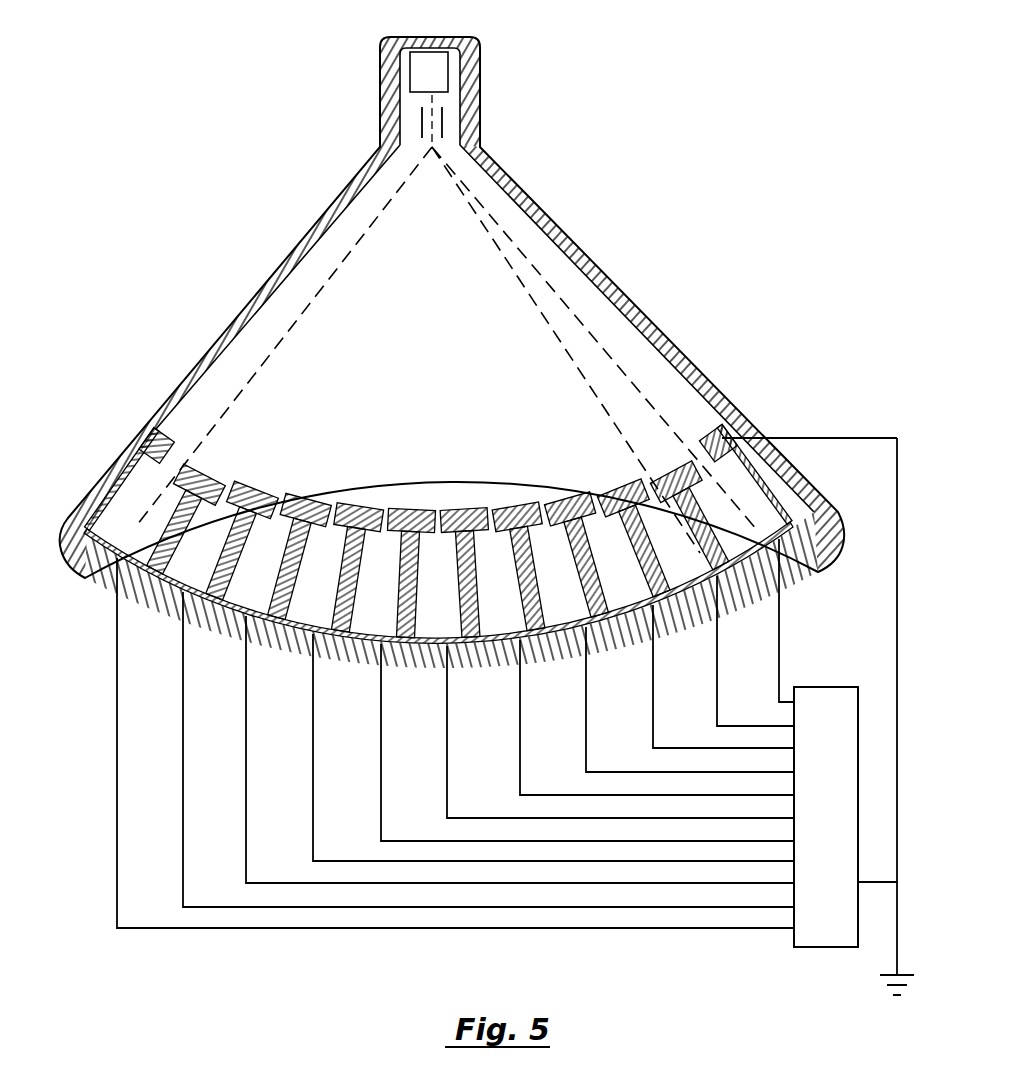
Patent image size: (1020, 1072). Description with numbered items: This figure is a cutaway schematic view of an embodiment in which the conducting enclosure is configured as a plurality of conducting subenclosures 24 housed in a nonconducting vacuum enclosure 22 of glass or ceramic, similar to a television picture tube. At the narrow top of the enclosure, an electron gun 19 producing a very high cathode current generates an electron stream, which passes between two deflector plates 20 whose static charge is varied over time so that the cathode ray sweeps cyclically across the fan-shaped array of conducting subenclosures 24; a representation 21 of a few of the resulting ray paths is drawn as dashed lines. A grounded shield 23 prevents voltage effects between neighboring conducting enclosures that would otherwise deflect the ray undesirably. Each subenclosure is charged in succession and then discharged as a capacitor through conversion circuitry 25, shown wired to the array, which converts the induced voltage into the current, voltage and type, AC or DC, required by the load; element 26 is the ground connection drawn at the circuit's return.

The electron gun 19 is at (446, 73).
The deflector plates 20 is at (446, 118).
The representation of output cathode ray paths 21 is at (510, 237).
The nonconducting vacuum enclosure 22 is at (568, 246).
The grounded shield 23 is at (700, 440).
The conducting subenclosures 24 is at (770, 492).
The conversion circuitry 25 is at (828, 687).
The ground 26 is at (880, 975).